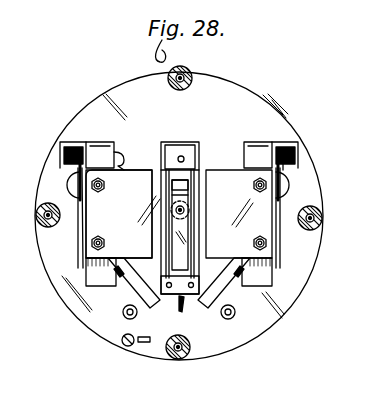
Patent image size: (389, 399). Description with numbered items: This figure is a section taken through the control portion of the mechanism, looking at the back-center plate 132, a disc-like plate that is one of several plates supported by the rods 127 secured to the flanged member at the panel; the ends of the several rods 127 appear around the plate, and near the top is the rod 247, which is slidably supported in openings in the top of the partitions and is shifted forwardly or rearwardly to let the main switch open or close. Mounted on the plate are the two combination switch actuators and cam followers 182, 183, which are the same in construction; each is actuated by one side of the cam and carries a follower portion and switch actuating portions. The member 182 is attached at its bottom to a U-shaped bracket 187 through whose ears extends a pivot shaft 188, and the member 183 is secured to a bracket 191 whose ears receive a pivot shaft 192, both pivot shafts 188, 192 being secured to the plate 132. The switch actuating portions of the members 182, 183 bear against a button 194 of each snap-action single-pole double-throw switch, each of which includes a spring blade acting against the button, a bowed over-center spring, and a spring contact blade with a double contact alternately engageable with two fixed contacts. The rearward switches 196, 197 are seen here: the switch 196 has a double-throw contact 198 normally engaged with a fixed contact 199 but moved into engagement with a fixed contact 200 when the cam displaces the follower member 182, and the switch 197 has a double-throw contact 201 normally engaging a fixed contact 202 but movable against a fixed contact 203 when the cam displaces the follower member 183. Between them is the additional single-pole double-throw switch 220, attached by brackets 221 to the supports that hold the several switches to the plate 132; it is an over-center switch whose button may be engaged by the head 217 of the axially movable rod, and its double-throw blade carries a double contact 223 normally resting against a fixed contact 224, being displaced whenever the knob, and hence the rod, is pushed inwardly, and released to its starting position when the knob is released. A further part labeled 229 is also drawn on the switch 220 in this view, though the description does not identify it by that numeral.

The rods 127 is at (40, 219).
The back-center plate 132 is at (290, 306).
The combination switch actuator and cam follower 182 is at (148, 266).
The follower and actuator 183 is at (216, 278).
The U-shaped bracket 187 is at (122, 343).
The pivot shaft 188 is at (124, 314).
The bracket 191 is at (214, 306).
The pivot shaft 192 is at (234, 318).
The button 194 is at (88, 210).
The rearward switch 196 is at (306, 170).
The rearward switch 197 is at (54, 172).
The double-throw contact 198 is at (283, 150).
The fixed contact 199 is at (300, 155).
The fixed contact 200 is at (278, 156).
The double-throw contact 201 is at (78, 160).
The fixed contact 202 is at (64, 155).
The fixed contact 203 is at (100, 150).
The head 217 is at (170, 228).
The single-pole double-throw switch 220 is at (182, 140).
The brackets 221 is at (144, 176).
The double contact 223 is at (176, 300).
The fixed contact 224 is at (184, 158).
The slide pin 229 is at (186, 212).
The rod 247 is at (188, 70).